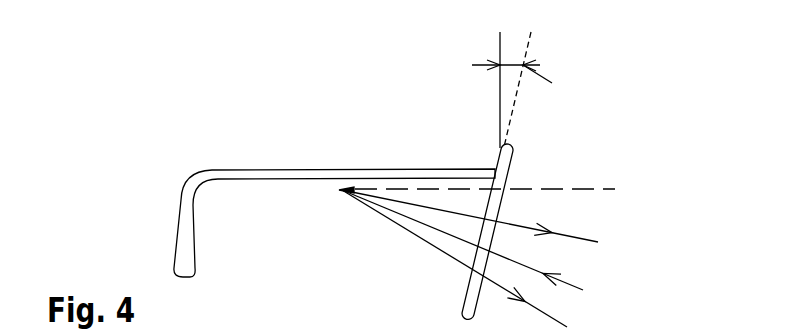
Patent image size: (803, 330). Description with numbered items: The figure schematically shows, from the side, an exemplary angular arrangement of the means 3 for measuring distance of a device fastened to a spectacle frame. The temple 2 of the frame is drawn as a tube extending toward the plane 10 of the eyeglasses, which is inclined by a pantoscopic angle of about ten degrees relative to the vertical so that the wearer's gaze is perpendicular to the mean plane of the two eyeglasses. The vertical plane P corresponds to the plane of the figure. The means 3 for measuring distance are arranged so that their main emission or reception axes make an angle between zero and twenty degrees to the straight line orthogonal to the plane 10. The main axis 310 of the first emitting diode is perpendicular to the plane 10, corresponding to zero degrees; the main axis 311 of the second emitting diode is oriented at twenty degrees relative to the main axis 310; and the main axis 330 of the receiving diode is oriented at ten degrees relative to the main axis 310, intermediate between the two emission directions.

The temple 2 is at (247, 178).
The means for measuring distance 3 is at (525, 167).
The plane of the eyeglasses 10 is at (464, 308).
The main axis of the first emitting diode 310 is at (573, 236).
The main axis of the receiving diode 330 is at (568, 283).
The main axis of the second emitting diode 311 is at (551, 317).
The vertical plane P is at (179, 139).